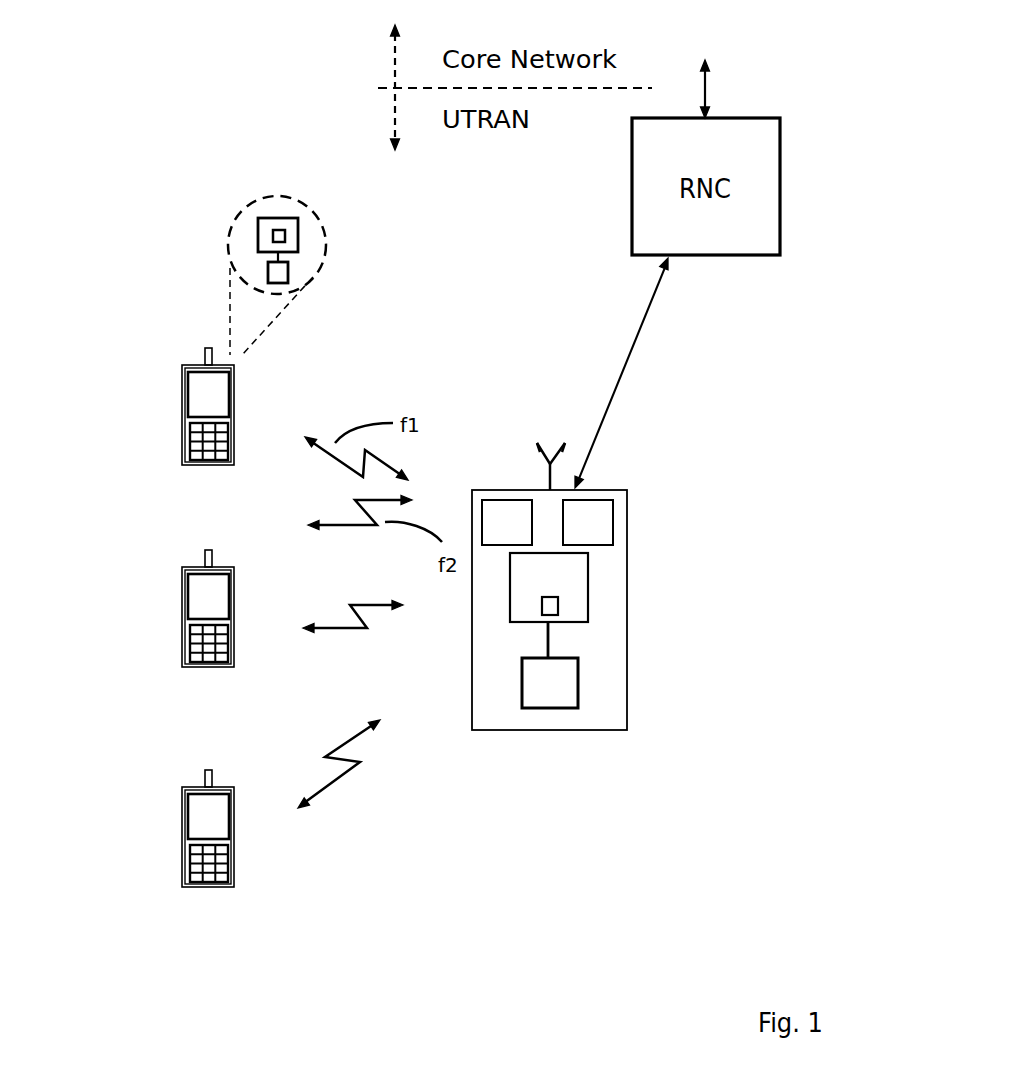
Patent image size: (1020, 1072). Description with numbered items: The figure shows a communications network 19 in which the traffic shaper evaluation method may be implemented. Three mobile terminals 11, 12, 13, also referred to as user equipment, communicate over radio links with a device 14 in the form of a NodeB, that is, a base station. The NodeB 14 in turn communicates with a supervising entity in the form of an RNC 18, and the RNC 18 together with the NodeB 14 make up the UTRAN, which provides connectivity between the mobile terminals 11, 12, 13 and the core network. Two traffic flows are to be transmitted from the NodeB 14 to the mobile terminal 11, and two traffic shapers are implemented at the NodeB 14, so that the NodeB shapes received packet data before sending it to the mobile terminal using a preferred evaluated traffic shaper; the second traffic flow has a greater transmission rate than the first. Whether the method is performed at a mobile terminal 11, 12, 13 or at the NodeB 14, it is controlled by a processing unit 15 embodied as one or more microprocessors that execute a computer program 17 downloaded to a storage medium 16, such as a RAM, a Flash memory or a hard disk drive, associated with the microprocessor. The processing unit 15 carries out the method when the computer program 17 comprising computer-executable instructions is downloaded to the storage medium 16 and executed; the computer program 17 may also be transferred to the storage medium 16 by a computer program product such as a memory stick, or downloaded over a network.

The mobile terminal 11 is at (170, 370).
The mobile terminal 12 is at (168, 572).
The mobile terminal 13 is at (168, 792).
The NodeB 14 is at (600, 490).
The processing unit 15 is at (537, 682).
The storage medium 16 is at (573, 572).
The computer program 17 is at (553, 606).
The RNC 18 is at (735, 118).
The network 19 is at (573, 876).